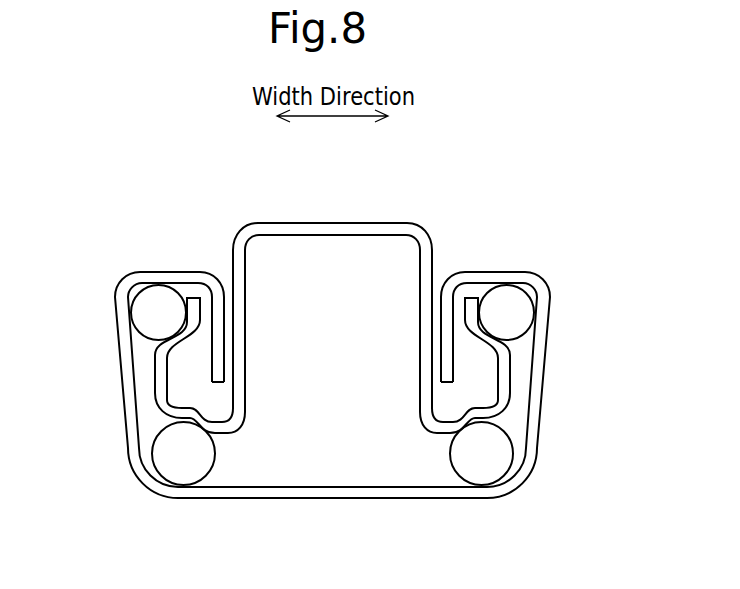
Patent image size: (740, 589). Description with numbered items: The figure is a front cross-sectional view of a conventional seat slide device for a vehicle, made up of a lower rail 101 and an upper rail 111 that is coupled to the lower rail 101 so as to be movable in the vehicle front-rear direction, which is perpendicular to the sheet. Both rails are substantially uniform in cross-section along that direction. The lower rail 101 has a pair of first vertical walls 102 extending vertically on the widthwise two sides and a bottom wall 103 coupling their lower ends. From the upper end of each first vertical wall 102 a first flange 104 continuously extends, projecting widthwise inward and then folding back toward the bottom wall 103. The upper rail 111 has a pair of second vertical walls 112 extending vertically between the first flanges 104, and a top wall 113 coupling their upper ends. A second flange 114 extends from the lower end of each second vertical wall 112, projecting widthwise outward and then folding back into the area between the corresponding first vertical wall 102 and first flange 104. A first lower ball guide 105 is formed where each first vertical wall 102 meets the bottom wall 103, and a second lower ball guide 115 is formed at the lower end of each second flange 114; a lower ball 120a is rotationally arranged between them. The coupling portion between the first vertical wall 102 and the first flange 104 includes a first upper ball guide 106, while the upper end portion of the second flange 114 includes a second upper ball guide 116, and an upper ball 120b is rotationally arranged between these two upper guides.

The lower rail 101 is at (541, 258).
The first vertical wall 102 is at (118, 393).
The bottom wall 103 is at (330, 500).
The first flange 104 is at (227, 353).
The first lower ball guide 105 is at (516, 488).
The first upper ball guide 106 is at (541, 289).
The upper rail 111 is at (457, 229).
The second vertical wall 112 is at (248, 305).
The top wall 113 is at (333, 224).
The second flange 114 is at (157, 357).
The second lower ball guide 115 is at (467, 415).
The second upper ball guide 116 is at (475, 323).
The lower ball 120a is at (208, 465).
The upper ball 120b is at (163, 293).